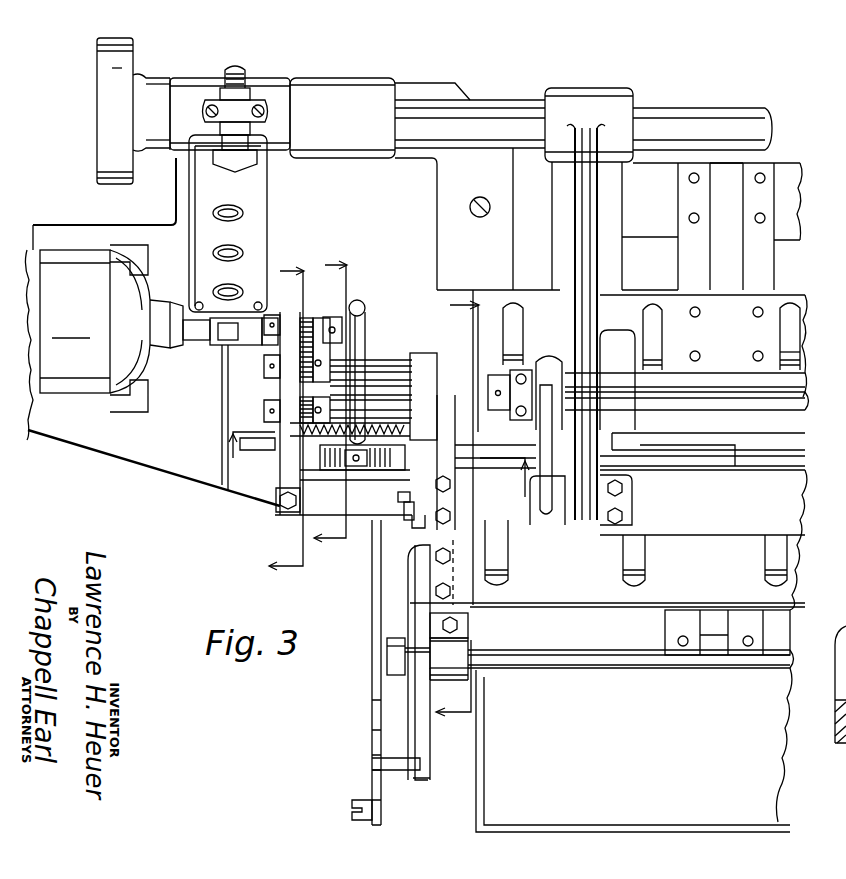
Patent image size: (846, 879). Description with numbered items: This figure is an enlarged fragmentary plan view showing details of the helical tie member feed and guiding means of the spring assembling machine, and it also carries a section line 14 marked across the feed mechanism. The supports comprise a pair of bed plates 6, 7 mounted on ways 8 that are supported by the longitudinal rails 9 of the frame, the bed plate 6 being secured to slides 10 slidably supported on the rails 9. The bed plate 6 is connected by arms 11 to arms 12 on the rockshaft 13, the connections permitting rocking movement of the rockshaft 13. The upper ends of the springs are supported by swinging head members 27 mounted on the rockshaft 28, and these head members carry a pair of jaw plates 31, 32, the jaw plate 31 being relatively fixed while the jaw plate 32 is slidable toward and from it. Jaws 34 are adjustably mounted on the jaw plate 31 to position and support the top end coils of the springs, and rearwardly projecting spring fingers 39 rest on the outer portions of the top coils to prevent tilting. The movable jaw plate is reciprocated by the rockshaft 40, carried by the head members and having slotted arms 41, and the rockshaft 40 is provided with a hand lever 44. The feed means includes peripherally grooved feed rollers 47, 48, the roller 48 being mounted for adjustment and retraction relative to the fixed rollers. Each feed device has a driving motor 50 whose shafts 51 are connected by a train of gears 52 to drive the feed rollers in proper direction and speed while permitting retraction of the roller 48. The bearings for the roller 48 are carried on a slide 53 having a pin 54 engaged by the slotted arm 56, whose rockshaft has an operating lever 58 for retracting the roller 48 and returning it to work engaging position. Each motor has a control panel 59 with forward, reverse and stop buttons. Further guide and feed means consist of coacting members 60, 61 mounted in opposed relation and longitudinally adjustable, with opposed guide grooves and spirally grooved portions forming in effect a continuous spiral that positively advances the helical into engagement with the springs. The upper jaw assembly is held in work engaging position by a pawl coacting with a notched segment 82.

The bed plate 6 is at (812, 591).
The bed plate 7 is at (772, 338).
The ways 8 is at (775, 280).
The longitudinal rails 9 is at (790, 222).
The slides 10 is at (730, 259).
The arms 11 is at (415, 619).
The arms 12 is at (398, 662).
The rockshaft 13 is at (570, 678).
The section line 14- 14 is at (272, 416).
The swinging head members 27 is at (572, 260).
The rockshaft 28 is at (506, 118).
The jaw plate 31 is at (795, 497).
The jaw plate 32 is at (795, 388).
The jaws 34 is at (790, 356).
The spring fingers 39 is at (765, 553).
The rockshaft 40 is at (710, 396).
The arms 41 is at (497, 374).
The hand lever 44 is at (560, 457).
The feed roller 47 is at (425, 425).
The feed roller 48 is at (355, 478).
The driving motor 50 is at (82, 385).
The shafts 51 is at (200, 332).
The train of gears 52 is at (300, 370).
The slide 53 is at (412, 522).
The pin 54 is at (397, 502).
The slotted arm 56 is at (404, 512).
The operating lever 58 is at (356, 332).
The control panel 59 is at (265, 219).
The guide and feed member 60 is at (736, 464).
The guide and feed member 61 is at (732, 449).
The segment 82 is at (374, 716).